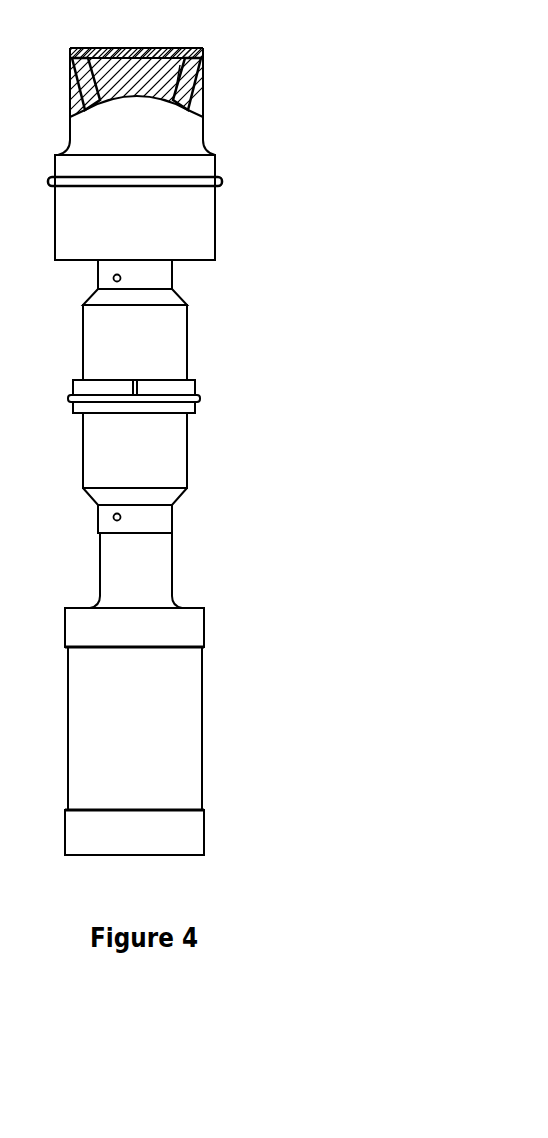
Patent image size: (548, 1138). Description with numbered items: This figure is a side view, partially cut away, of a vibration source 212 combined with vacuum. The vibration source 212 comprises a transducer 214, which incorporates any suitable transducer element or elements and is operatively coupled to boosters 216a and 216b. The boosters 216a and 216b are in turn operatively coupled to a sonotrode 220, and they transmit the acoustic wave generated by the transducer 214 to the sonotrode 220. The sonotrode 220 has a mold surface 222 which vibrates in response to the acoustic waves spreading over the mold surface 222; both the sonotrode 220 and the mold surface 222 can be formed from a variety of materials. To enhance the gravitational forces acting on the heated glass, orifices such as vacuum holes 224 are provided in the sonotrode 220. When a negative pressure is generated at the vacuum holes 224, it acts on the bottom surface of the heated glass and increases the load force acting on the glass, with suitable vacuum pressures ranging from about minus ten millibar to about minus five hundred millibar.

The vibration source 212 is at (215, 520).
The transducer 214 is at (168, 711).
The booster 216a is at (168, 448).
The booster 216b is at (168, 350).
The sonotrode 220 is at (168, 228).
The mold surface 222 is at (192, 58).
The vacuum holes 224 is at (182, 85).